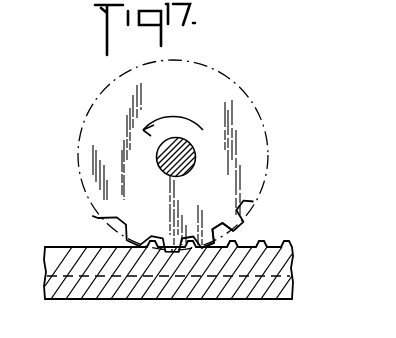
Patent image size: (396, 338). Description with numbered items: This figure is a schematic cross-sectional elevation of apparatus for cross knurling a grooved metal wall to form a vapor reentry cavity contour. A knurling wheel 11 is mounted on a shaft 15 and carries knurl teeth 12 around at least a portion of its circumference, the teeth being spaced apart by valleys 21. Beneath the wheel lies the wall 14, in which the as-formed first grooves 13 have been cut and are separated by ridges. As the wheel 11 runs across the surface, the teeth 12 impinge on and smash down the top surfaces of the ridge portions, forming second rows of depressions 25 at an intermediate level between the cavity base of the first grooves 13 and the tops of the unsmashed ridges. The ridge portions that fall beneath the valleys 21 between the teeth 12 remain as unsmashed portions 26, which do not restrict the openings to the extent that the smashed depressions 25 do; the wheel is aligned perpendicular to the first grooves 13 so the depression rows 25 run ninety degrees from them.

The wheel 11 is at (244, 125).
The shaft 15 is at (193, 158).
The knurl teeth 12 is at (236, 236).
The valleys 21 is at (220, 226).
The wall 14 is at (66, 247).
The first grooves 13 is at (292, 258).
The second rows of depressions 25 is at (242, 244).
The unsmashed portions 26 is at (263, 250).